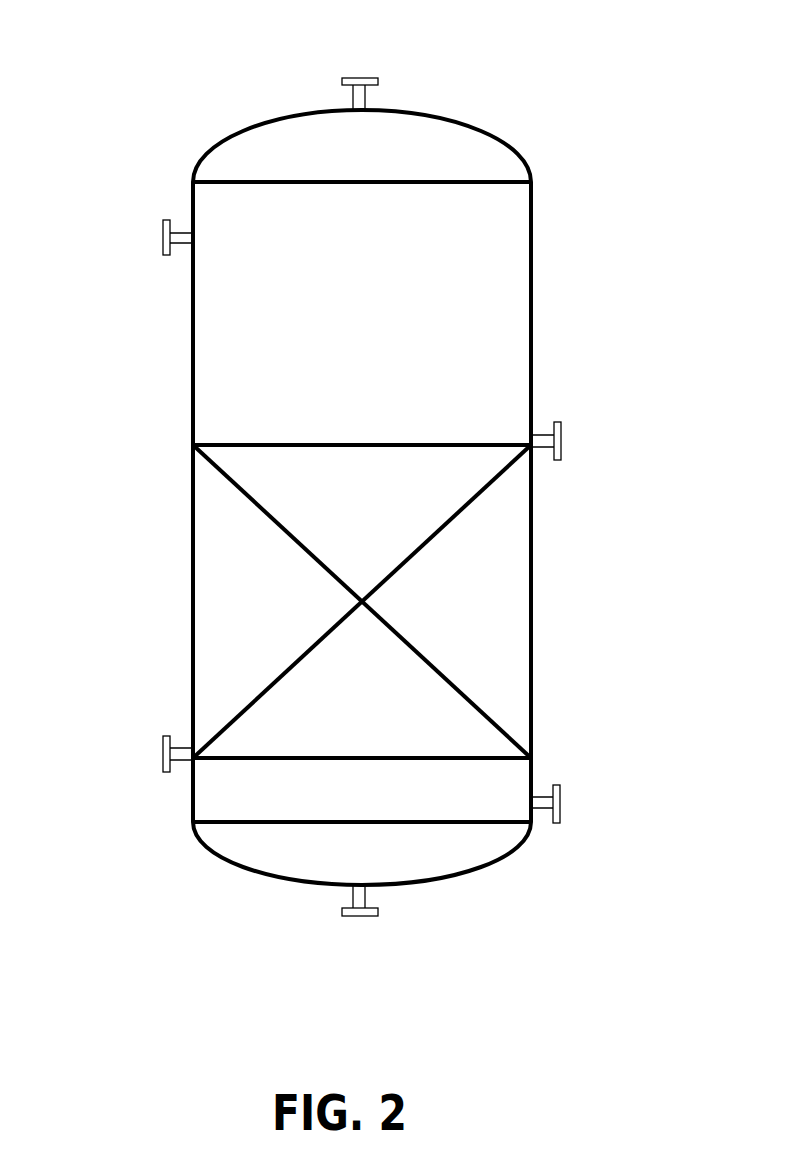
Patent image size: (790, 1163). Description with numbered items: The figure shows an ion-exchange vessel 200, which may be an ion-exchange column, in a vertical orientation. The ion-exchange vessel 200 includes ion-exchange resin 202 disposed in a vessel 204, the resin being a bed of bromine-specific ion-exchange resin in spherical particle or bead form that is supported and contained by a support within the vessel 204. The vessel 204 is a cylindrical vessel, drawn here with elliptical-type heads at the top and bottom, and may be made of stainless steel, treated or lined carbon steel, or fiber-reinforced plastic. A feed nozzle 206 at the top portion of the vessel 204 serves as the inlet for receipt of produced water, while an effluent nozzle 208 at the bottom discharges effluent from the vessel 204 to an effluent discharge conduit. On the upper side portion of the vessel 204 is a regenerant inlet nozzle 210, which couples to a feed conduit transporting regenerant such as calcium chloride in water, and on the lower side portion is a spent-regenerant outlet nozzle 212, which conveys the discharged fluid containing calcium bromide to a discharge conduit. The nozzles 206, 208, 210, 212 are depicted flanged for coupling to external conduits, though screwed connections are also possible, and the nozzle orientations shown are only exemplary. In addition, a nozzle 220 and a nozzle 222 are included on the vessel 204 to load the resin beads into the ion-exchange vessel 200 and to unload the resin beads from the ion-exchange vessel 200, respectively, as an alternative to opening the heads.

The ion-exchange vessel 200 is at (372, 537).
The ion-exchange resin 202 is at (467, 625).
The vessel 204 is at (533, 353).
The feed nozzle 206 is at (365, 78).
The effluent nozzle 208 is at (357, 917).
The regenerant inlet nozzle 210 is at (162, 237).
The spent-regenerant outlet nozzle 212 is at (562, 807).
The nozzle 220 is at (563, 445).
The nozzle 222 is at (162, 752).